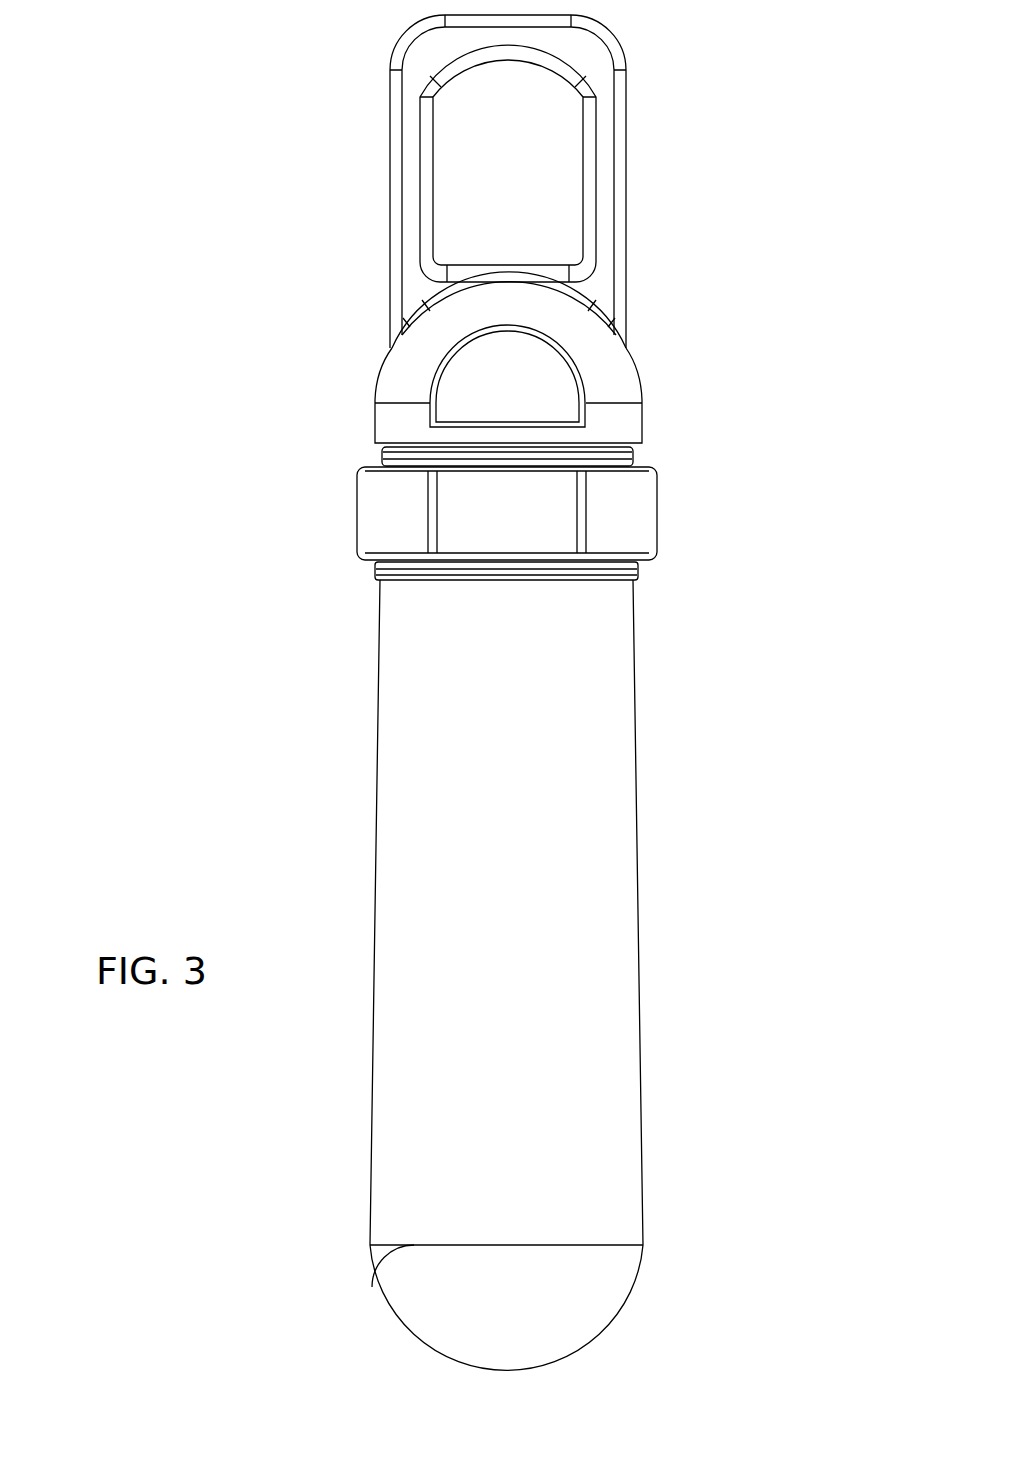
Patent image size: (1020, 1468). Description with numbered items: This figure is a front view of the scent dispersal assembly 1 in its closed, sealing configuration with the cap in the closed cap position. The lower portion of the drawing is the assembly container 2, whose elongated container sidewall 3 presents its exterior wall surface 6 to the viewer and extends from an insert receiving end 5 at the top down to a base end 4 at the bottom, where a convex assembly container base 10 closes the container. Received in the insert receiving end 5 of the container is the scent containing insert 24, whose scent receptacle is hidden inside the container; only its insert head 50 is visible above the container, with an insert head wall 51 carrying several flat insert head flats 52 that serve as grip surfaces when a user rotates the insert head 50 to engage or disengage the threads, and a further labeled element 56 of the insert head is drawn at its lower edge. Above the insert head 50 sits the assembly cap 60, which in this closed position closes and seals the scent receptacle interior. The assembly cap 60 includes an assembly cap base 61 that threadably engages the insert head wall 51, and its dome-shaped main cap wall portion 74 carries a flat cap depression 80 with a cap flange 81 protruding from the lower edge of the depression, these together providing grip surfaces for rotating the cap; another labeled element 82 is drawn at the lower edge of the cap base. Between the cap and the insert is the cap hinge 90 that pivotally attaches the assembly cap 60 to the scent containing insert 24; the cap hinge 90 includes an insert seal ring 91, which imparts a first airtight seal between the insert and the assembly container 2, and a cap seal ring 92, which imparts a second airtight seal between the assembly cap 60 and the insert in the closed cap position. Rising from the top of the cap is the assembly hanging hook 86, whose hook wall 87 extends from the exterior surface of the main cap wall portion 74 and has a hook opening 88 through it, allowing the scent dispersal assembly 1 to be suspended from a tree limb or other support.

The scent dispersal assembly 1 is at (212, 128).
The assembly container 2 is at (375, 750).
The container sidewall 3 is at (596, 882).
The base end 4 is at (372, 1285).
The insert receiving end 5 is at (596, 560).
The exterior wall surface 6 is at (530, 883).
The assembly container base 10 is at (578, 1320).
The scent containing insert 24 is at (330, 536).
The insert head 50 is at (355, 558).
The insert head wall 51 is at (638, 463).
The insert head flats 52 is at (400, 527).
The lower ring 56 is at (640, 564).
The assembly cap 60 is at (358, 303).
The assembly cap base 61 is at (644, 361).
The main cap wall portion 74 is at (414, 366).
The cap depression 80 is at (482, 381).
The cap flange 81 is at (537, 428).
The gasket 82 is at (382, 449).
The assembly hanging hook 86 is at (630, 112).
The hook wall 87 is at (600, 178).
The hook opening 88 is at (435, 220).
The cap hinge 90 is at (373, 579).
The insert seal ring 91 is at (571, 570).
The cap seal ring 92 is at (598, 456).